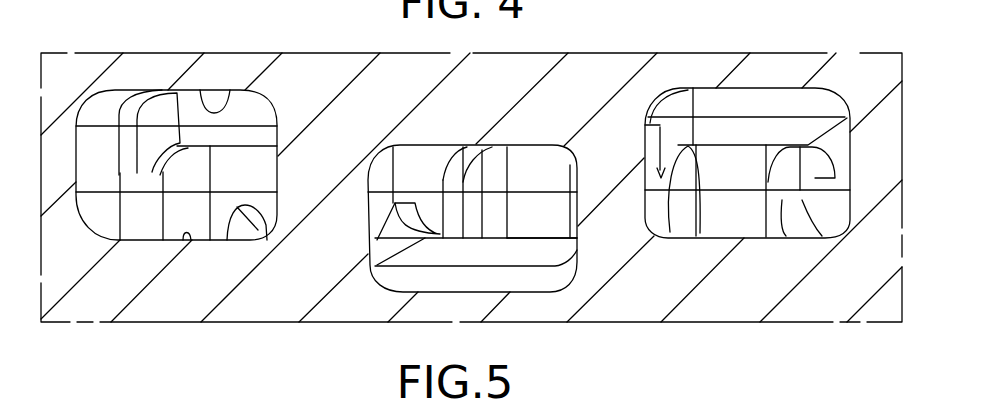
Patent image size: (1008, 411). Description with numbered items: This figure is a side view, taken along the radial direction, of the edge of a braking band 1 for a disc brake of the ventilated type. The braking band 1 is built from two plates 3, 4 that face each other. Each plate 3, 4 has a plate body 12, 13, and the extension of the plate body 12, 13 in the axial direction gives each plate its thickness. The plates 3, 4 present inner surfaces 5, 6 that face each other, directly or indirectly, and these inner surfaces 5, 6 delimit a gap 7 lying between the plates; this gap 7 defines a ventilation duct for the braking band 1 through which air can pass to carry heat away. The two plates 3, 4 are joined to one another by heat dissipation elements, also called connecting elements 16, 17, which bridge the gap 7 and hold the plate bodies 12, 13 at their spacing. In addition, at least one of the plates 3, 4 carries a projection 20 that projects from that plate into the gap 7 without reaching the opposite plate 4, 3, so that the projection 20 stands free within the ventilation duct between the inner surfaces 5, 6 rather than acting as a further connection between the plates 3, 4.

The braking band 1 is at (643, 93).
The plate 3 is at (790, 78).
The plate 4 is at (715, 298).
The inner surface 5 is at (217, 110).
The inner surface 6 is at (203, 242).
The gap 7 is at (572, 337).
The plate body 12 is at (473, 95).
The plate body 13 is at (337, 258).
The connecting element 16 is at (608, 170).
The connecting element 17 is at (320, 167).
The projection 20 is at (147, 245).